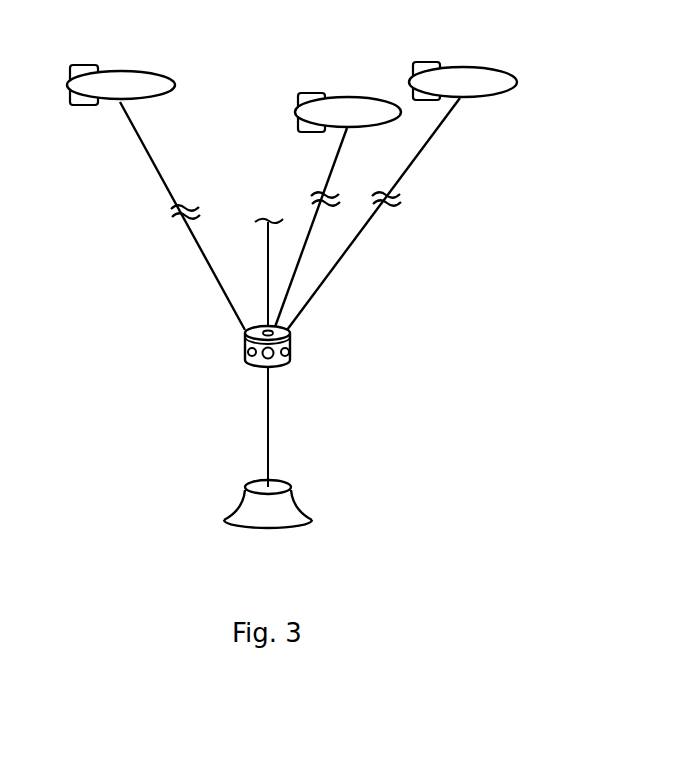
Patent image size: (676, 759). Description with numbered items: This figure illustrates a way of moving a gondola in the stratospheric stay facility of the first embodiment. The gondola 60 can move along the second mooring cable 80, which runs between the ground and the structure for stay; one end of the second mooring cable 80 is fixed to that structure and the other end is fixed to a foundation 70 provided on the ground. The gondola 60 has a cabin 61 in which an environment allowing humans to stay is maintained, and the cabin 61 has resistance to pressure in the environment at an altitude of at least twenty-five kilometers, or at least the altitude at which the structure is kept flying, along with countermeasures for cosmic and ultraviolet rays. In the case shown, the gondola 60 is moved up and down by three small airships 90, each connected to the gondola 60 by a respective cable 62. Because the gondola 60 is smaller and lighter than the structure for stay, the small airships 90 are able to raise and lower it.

The small airship 90 is at (137, 75).
The cable 62 is at (160, 177).
The gondola 60 is at (286, 368).
The cabin 61 is at (241, 353).
The second mooring cable 80 is at (267, 437).
The foundation 70 is at (288, 522).